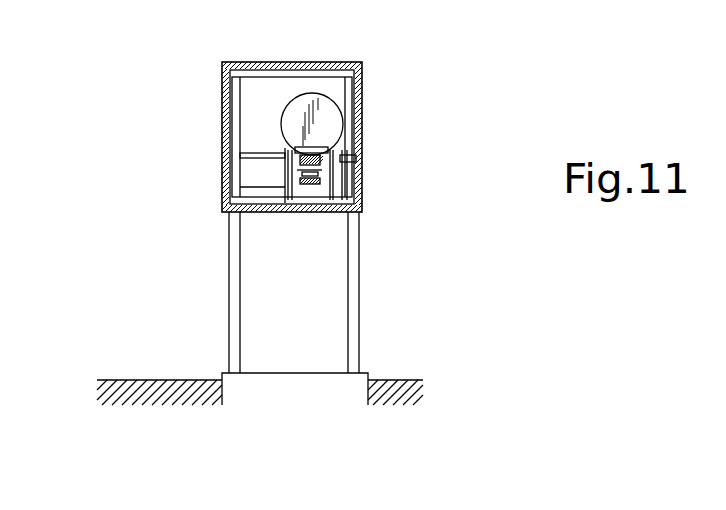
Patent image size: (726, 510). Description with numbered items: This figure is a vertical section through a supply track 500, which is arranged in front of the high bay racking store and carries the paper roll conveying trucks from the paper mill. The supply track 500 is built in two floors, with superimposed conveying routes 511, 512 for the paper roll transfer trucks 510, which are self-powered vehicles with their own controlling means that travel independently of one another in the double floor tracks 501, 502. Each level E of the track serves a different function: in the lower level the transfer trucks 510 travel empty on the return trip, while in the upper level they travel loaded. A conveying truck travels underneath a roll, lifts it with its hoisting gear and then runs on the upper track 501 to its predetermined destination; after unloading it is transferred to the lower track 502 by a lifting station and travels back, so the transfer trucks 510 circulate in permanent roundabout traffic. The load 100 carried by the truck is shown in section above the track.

The supply track 500 is at (377, 63).
The ball 100 is at (325, 115).
The paper roll transfer truck 510 is at (333, 155).
The upper track 501 is at (333, 165).
The lower track 502 is at (333, 188).
The conveying route 511 is at (287, 167).
The conveying route 512 is at (287, 187).
The level E is at (283, 148).